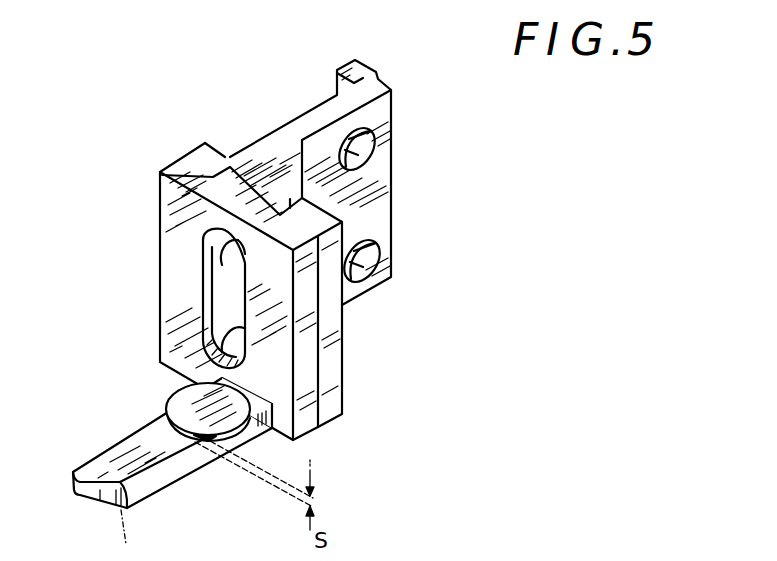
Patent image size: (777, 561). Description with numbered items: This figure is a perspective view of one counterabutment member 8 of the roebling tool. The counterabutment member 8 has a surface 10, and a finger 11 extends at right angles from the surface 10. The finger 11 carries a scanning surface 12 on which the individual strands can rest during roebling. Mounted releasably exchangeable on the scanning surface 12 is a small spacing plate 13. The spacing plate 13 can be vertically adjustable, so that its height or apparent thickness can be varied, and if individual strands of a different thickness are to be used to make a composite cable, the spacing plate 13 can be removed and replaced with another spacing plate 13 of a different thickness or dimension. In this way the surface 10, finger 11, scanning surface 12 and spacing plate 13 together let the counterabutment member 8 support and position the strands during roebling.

The counterabutment member 8 is at (118, 348).
The surface 10 is at (173, 222).
The finger 11 is at (135, 535).
The scanning surface 12 is at (125, 472).
The spacing plate 13 is at (180, 407).